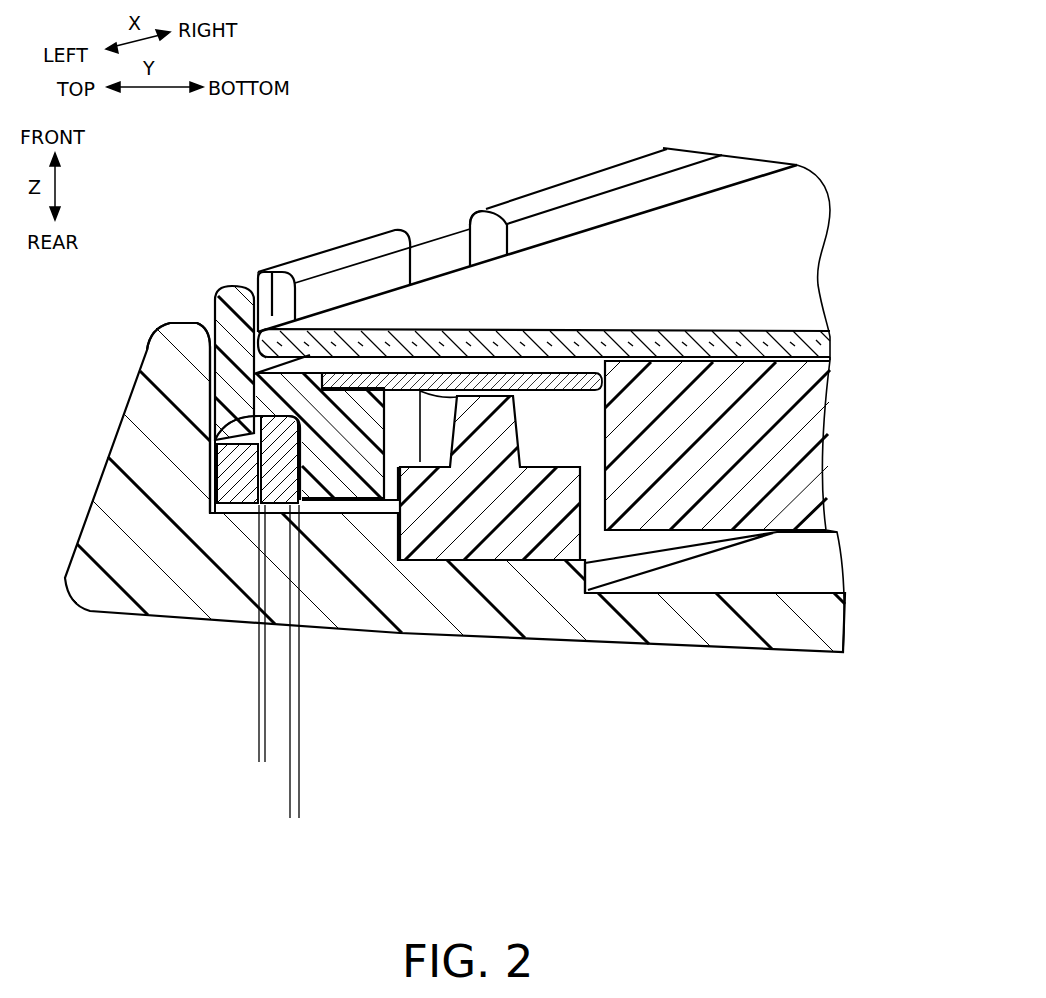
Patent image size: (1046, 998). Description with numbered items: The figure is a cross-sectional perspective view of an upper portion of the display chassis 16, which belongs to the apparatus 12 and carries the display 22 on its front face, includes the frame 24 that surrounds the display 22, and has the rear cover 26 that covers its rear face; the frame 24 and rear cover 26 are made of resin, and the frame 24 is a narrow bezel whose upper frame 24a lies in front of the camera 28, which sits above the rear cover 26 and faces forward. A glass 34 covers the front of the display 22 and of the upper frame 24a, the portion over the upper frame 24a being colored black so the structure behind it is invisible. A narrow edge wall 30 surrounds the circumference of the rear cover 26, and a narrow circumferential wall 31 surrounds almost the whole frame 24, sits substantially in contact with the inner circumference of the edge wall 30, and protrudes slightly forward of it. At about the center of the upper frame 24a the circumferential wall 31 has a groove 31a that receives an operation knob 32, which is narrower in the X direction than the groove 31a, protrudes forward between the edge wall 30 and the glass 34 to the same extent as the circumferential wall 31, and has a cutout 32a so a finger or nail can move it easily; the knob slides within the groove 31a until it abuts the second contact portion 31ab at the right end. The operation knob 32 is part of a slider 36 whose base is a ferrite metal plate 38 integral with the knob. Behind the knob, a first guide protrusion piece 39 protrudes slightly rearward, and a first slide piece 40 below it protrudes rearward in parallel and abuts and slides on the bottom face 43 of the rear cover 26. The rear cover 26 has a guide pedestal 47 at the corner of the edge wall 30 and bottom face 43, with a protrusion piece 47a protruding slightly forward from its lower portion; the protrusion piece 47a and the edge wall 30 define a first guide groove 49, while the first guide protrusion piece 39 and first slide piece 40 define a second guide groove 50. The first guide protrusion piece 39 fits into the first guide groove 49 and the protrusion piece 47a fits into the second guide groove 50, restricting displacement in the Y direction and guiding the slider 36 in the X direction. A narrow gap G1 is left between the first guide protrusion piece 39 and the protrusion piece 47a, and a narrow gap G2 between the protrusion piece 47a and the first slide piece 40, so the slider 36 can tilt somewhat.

The cover 12 is at (335, 182).
The display chassis 16 is at (755, 82).
The display 22 is at (815, 485).
The frame 24 is at (544, 214).
The upper frame 24a is at (642, 160).
The rear cover 26 is at (728, 620).
The camera 28 is at (555, 445).
The edge wall 30 is at (187, 321).
The circumferential wall 31 is at (560, 183).
The groove 31a is at (447, 240).
The second contact portion 31ab is at (480, 227).
The operation knob 32 is at (338, 251).
The cutout 32a is at (248, 198).
The glass 34 is at (800, 263).
The slider 36 is at (462, 572).
The metal plate 38 is at (487, 380).
The first guide protrusion piece 39 is at (207, 435).
The first slide piece 40 is at (304, 539).
The bottom face 43 is at (333, 480).
The guide pedestal 47 is at (160, 579).
The protrusion piece 47a is at (217, 477).
The first guide groove 49 is at (215, 443).
The second guide groove 50 is at (207, 433).
The gap G1 is at (290, 750).
The gap G2 is at (330, 808).